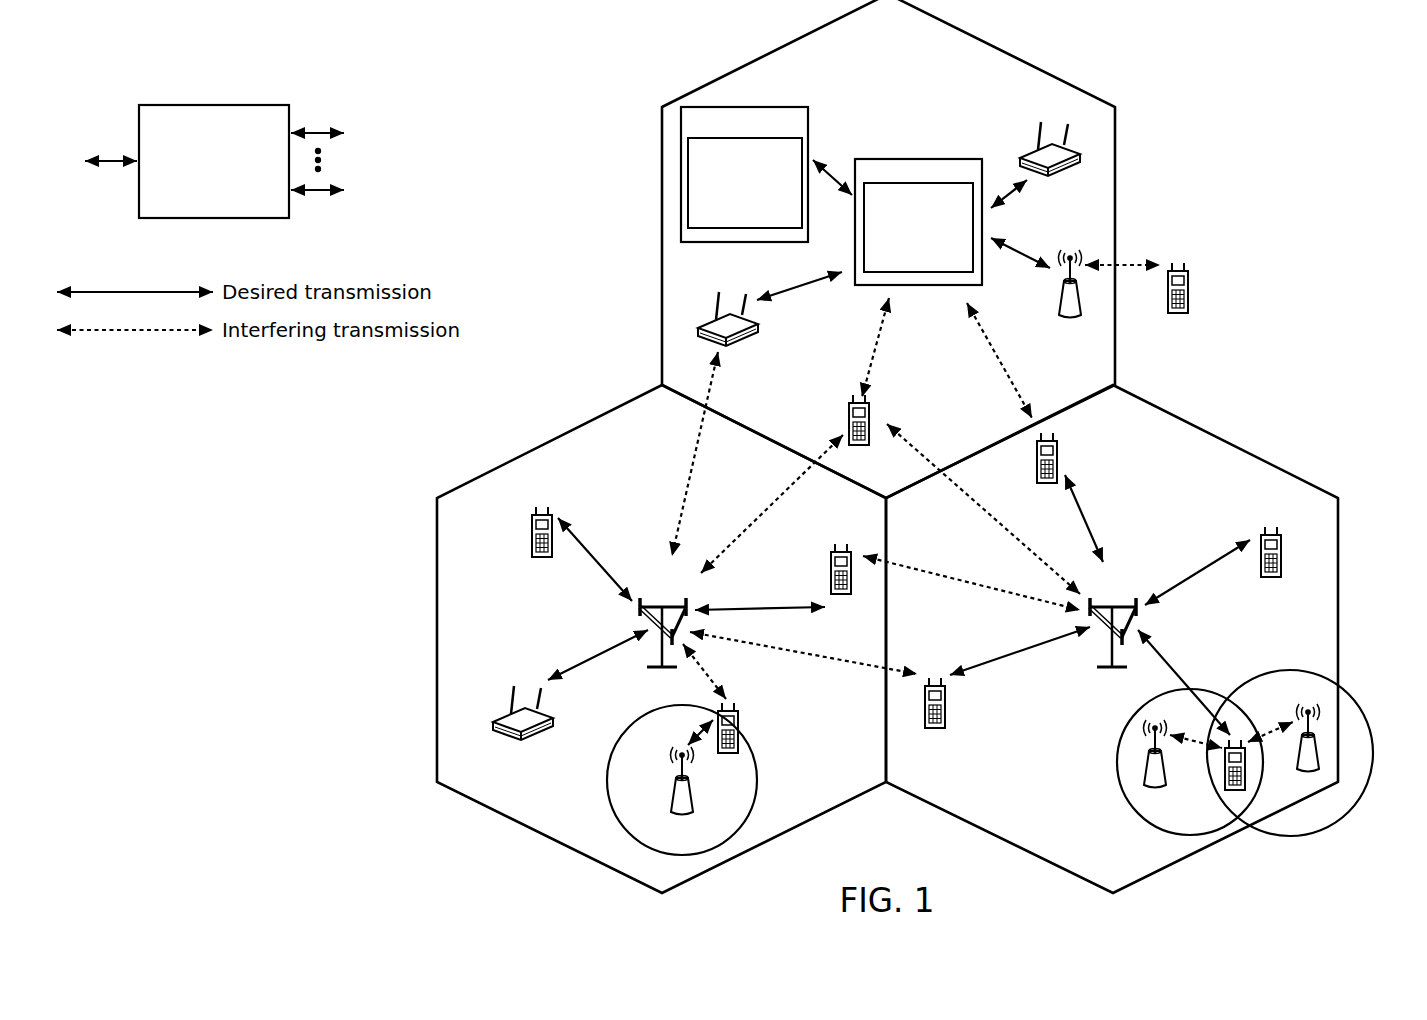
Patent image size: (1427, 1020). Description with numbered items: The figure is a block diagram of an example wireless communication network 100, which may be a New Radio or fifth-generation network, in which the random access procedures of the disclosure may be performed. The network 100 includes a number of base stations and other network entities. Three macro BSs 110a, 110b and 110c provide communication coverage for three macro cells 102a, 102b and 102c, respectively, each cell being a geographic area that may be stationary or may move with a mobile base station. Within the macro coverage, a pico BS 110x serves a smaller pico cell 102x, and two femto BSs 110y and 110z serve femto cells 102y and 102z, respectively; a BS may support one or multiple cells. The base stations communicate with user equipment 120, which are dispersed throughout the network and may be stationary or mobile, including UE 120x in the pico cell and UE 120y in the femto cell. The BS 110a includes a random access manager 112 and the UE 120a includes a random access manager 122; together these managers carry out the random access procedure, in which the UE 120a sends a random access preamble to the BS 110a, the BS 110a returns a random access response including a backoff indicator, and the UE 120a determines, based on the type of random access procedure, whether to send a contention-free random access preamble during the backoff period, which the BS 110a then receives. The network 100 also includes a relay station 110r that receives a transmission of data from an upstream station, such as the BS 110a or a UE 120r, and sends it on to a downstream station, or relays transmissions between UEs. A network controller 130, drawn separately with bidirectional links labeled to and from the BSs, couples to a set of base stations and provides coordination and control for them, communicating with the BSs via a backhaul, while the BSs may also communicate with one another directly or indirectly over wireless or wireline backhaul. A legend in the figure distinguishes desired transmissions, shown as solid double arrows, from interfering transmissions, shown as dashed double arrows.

The wireless communication network 100 is at (1267, 66).
The network controller 130 is at (209, 104).
The macro cell 102a is at (1001, 50).
The macro cell 102b is at (553, 442).
The macro cell 102c is at (1228, 443).
The pico cell 102x is at (633, 723).
The femto cell 102y is at (1125, 727).
The femto cell 102z is at (1285, 670).
The macro BS 110a is at (931, 203).
The macro BS 110b is at (660, 602).
The macro BS 110c is at (1110, 602).
The relay station 110r is at (1058, 302).
The pico BS 110x is at (693, 807).
The femto BS 110y is at (1165, 780).
The femto BS 110z is at (1317, 765).
The random access manager 112 is at (907, 246).
The user equipment 120 is at (1050, 140).
The UE 120a is at (744, 158).
The UE 120r is at (1190, 302).
The UE 120x is at (740, 722).
The UE 120y is at (1224, 784).
The random access manager 122 is at (735, 201).